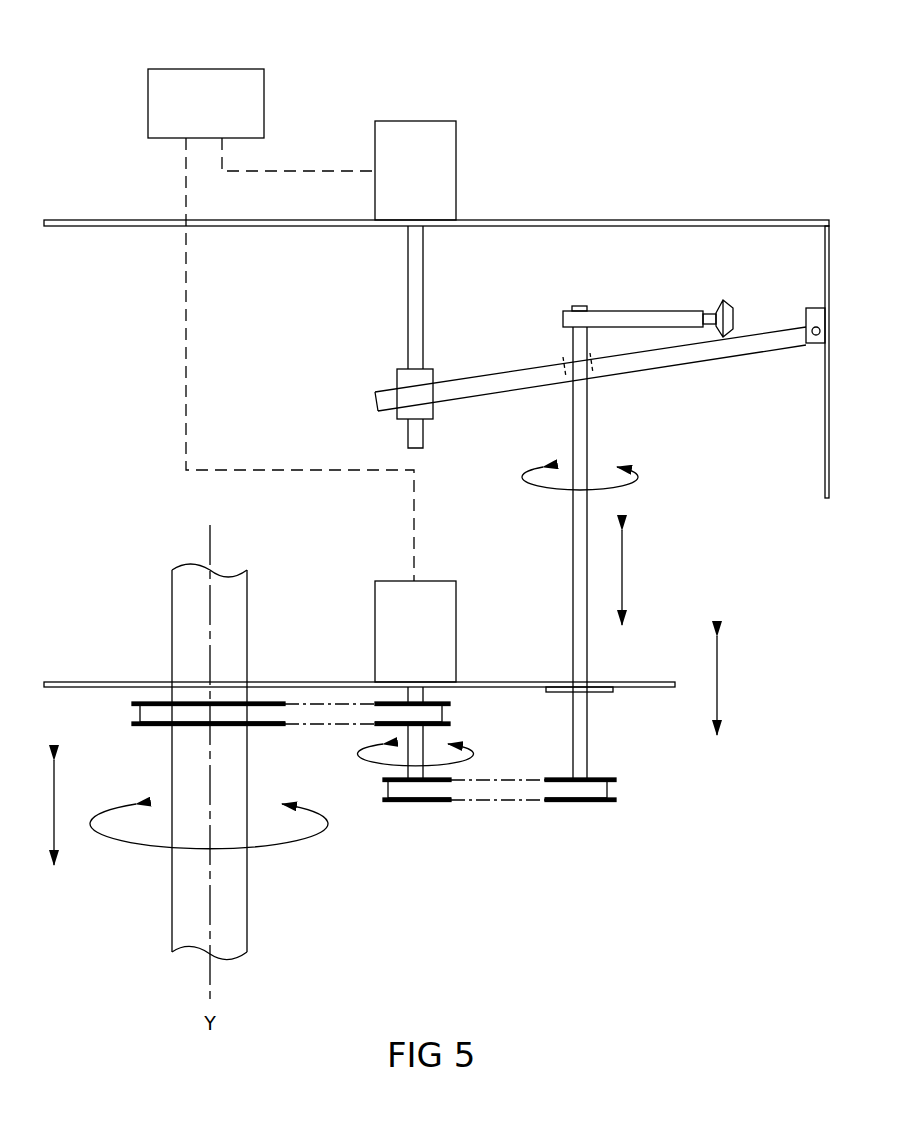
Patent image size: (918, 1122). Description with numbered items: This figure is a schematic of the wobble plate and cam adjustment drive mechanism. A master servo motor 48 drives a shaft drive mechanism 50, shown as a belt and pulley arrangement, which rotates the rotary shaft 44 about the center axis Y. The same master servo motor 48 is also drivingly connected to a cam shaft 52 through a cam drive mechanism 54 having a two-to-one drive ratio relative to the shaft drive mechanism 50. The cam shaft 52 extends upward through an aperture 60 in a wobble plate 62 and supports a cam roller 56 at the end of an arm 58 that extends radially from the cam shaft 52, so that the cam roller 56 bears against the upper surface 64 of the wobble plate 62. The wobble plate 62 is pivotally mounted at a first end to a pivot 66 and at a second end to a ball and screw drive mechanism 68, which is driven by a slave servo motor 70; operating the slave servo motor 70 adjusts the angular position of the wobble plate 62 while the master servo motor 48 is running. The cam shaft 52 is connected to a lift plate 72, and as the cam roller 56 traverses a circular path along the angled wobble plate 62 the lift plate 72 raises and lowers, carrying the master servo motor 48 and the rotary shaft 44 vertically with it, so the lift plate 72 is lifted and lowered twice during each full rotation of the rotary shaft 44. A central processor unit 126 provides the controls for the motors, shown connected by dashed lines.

The central processor unit 126 is at (181, 69).
The slave servo motor 70 is at (437, 121).
The ball and screw drive mechanism 68 is at (382, 305).
The wobble plate 62 is at (488, 380).
The aperture 60 is at (562, 355).
The cam shaft 52 is at (587, 389).
The arm 58 is at (604, 311).
The cam roller 56 is at (724, 300).
The upper surface 64 is at (766, 329).
The pivot 66 is at (812, 336).
The lift plate 72 is at (645, 681).
The master servo motor 48 is at (437, 583).
The shaft drive mechanism 50 is at (323, 736).
The cam drive mechanism 54 is at (495, 811).
The rotary shaft 44 is at (237, 572).